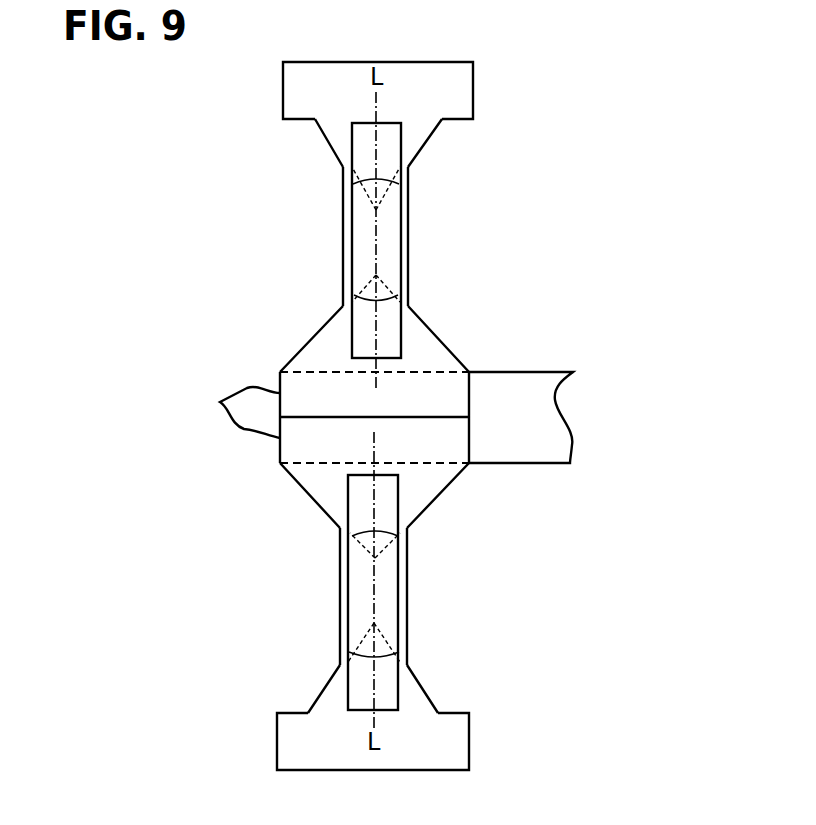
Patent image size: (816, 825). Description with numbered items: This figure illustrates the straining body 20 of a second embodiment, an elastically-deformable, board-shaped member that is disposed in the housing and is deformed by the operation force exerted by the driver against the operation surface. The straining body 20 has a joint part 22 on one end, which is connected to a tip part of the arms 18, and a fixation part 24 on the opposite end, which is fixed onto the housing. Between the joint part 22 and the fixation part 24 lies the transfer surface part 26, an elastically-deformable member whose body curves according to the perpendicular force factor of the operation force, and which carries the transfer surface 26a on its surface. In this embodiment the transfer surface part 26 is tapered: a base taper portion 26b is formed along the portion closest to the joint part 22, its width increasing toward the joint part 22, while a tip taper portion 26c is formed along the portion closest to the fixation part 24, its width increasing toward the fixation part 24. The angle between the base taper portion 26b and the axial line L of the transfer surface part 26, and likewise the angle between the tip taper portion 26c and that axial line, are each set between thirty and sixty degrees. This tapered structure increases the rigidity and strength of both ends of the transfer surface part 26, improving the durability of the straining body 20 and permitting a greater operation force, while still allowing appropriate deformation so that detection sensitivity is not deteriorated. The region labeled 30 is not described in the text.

The arms 18 is at (527, 372).
The straining body 20 is at (552, 128).
The joint part 22 is at (234, 412).
The fixation part 24 is at (473, 88).
The transfer surface part 26 is at (372, 416).
The transfer surface 26a is at (343, 255).
The base taper portion 26b is at (313, 336).
The tip taper portion 26c is at (328, 143).
The contact portion 30 is at (401, 215).